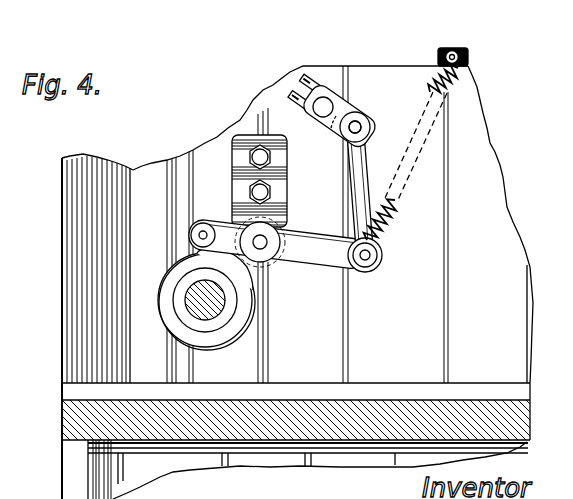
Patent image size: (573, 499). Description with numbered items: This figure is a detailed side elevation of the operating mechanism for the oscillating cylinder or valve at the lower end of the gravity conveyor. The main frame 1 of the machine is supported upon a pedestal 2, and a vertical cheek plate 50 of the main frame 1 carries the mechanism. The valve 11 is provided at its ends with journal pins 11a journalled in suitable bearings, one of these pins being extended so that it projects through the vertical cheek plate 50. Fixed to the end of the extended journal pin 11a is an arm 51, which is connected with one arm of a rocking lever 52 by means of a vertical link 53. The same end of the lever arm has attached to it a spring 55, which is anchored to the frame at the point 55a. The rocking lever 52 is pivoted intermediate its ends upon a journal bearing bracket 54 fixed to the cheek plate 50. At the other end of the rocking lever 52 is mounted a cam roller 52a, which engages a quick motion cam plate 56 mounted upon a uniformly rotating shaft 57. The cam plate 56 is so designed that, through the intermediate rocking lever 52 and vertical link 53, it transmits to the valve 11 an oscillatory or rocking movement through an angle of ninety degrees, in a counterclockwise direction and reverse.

The main frame 1 is at (67, 307).
The pedestal 2 is at (263, 436).
The valve 11 is at (336, 94).
The journal pin 11a is at (347, 104).
The vertical cheek plate 50 is at (490, 188).
The arm 51 is at (336, 128).
The rocking lever 52 is at (300, 263).
The cam roller 52a is at (191, 231).
The vertical link 53 is at (353, 192).
The journal bearing bracket 54 is at (277, 173).
The spring 55 is at (393, 215).
The anchor point 55a is at (458, 48).
The quick motion cam plate 56 is at (242, 283).
The shaft 57 is at (212, 308).